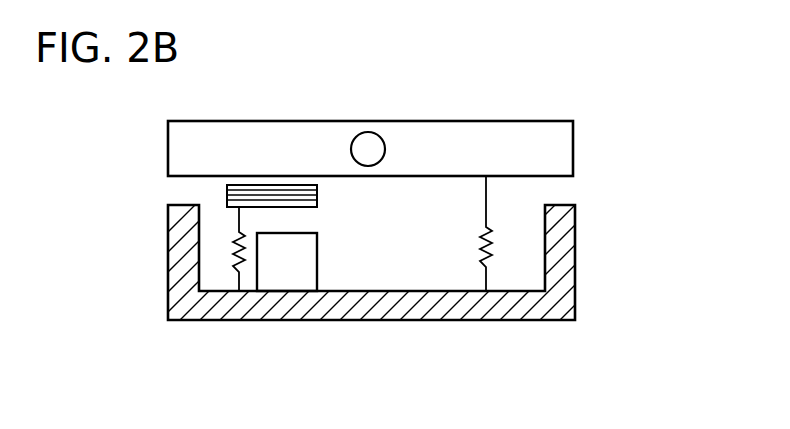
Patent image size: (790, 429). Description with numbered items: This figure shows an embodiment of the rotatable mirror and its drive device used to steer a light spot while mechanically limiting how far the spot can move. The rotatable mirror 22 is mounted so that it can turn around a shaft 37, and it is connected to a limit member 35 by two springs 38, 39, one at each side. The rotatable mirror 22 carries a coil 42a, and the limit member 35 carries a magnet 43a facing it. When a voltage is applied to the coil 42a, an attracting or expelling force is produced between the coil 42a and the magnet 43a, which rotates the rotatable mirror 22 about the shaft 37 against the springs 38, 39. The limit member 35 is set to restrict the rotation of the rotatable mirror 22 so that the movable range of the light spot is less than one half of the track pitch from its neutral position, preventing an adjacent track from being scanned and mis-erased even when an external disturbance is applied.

The rotatable mirror 22 is at (553, 142).
The limit member 35 is at (565, 263).
The shaft 37 is at (365, 132).
The spring 38 is at (486, 192).
The spring 39 is at (237, 262).
The coil 42a is at (227, 198).
The magnet 43a is at (285, 273).